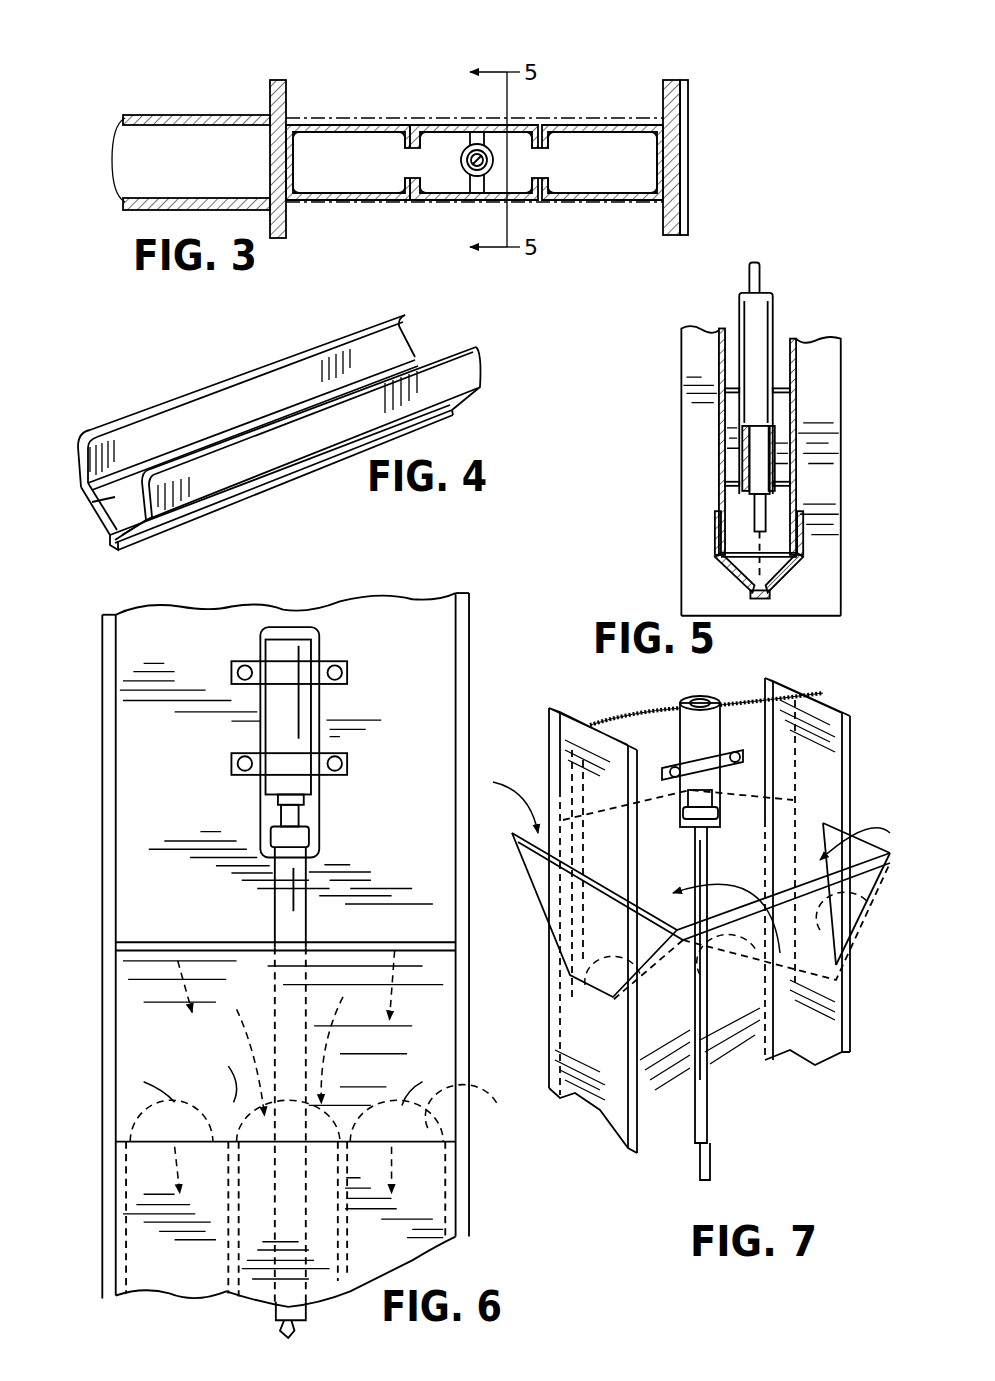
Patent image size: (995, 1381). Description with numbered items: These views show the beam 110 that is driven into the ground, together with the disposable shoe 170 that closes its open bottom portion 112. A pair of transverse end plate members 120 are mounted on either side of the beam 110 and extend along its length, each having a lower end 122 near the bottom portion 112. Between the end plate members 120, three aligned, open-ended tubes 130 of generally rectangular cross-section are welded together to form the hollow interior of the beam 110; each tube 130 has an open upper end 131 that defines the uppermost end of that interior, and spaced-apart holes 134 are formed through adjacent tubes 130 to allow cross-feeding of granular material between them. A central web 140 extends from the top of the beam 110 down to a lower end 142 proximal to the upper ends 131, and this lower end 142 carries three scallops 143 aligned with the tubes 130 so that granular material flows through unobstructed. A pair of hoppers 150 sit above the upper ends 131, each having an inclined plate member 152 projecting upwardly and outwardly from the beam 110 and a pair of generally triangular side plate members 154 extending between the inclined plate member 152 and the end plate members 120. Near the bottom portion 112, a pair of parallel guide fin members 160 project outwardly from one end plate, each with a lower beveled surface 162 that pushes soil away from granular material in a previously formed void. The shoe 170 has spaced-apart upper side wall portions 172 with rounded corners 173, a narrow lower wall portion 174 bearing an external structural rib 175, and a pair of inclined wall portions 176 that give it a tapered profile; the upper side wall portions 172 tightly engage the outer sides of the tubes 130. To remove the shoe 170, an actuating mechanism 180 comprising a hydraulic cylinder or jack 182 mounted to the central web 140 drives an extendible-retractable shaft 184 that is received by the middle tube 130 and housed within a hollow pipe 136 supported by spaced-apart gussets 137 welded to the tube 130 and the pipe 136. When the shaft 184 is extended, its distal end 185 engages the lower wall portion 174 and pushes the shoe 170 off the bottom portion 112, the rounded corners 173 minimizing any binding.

In FIG. 3, the beam 110 is at (703, 133).
In FIG. 5, the beam 110 is at (727, 305).
In FIG. 7, the beam 110 is at (662, 1123).
In FIG. 5, the bottom portion 112 is at (690, 570).
In FIG. 3, the transverse end plate member 120 is at (270, 97).
In FIG. 5, the transverse end plate member 120 is at (680, 378).
In FIG. 6, the transverse end plate member 120 is at (100, 755).
In FIG. 7, the transverse end plate member 120 is at (550, 727).
In FIG. 5, the lower end 122 is at (817, 613).
In FIG. 3, the tube 130 is at (423, 120).
In FIG. 5, the tube 130 is at (717, 418).
In FIG. 6, the tube 130 is at (257, 1205).
In FIG. 7, the tube 130 is at (480, 1217).
In FIG. 6, the open upper end 131 is at (227, 1135).
In FIG. 7, the open upper end 131 is at (480, 1170).
In FIG. 3, the hole 134 is at (405, 152).
In FIG. 3, the hollow pipe 136 is at (463, 143).
In FIG. 5, the hollow pipe 136 is at (770, 312).
In FIG. 6, the hollow pipe 136 is at (278, 880).
In FIG. 7, the hollow pipe 136 is at (715, 1112).
In FIG. 3, the gusset 137 is at (472, 178).
In FIG. 5, the gusset 137 is at (777, 345).
In FIG. 6, the central web 140 is at (398, 817).
In FIG. 7, the central web 140 is at (805, 717).
In FIG. 7, the lower end 142 is at (757, 1000).
In FIG. 6, the scallop 143 is at (334, 1071).
In FIG. 7, the scallop 143 is at (483, 1108).
In FIG. 6, the hopper 150 is at (127, 1016).
In FIG. 7, the hopper 150 is at (518, 860).
In FIG. 6, the inclined plate member 152 is at (140, 927).
In FIG. 7, the inclined plate member 152 is at (537, 827).
In FIG. 7, the triangular side plate member 154 is at (827, 830).
In FIG. 3, the guide fin member 160 is at (153, 197).
In FIG. 3, the lower beveled surface 162 is at (124, 200).
In FIG. 4, the disposable shoe 170 is at (183, 377).
In FIG. 5, the disposable shoe 170 is at (713, 520).
In FIG. 4, the upper side wall portion 172 is at (287, 433).
In FIG. 5, the upper side wall portion 172 is at (800, 523).
In FIG. 4, the rounded corner 173 is at (410, 320).
In FIG. 4, the lower wall portion 174 is at (120, 517).
In FIG. 5, the lower wall portion 174 is at (790, 552).
In FIG. 4, the external structural rib 175 is at (147, 533).
In FIG. 5, the external structural rib 175 is at (760, 597).
In FIG. 4, the inclined wall portion 176 is at (100, 508).
In FIG. 5, the inclined wall portion 176 is at (790, 582).
In FIG. 6, the actuating mechanism 180 is at (315, 640).
In FIG. 6, the hydraulic cylinder or jack 182 is at (270, 648).
In FIG. 7, the hydraulic cylinder or jack 182 is at (690, 722).
In FIG. 3, the extendible-retractable shaft 184 is at (490, 150).
In FIG. 5, the extendible-retractable shaft 184 is at (767, 277).
In FIG. 6, the extendible-retractable shaft 184 is at (274, 1306).
In FIG. 7, the extendible-retractable shaft 184 is at (712, 1153).
In FIG. 5, the distal end 185 is at (756, 530).